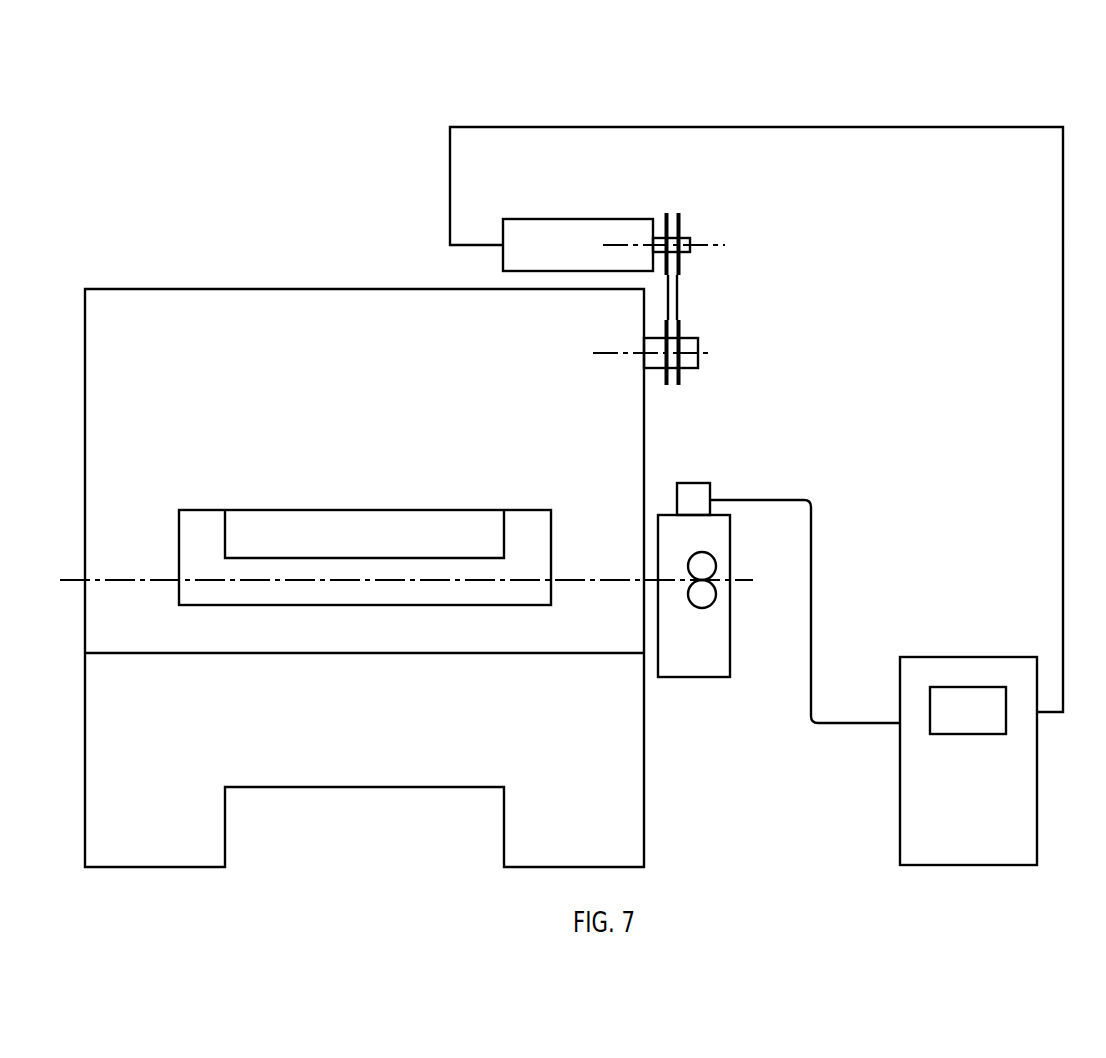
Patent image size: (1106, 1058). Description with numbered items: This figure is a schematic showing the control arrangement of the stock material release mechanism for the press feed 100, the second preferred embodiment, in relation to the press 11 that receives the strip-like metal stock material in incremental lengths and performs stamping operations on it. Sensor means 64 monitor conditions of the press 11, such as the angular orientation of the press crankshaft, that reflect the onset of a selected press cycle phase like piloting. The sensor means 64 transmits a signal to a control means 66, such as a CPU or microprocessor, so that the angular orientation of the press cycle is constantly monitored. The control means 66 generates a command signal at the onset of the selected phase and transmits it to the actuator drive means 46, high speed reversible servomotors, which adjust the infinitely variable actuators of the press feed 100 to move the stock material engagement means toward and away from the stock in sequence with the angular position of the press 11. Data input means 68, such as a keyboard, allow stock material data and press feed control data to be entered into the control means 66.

The press 11 is at (225, 287).
The sensor means 64 is at (548, 217).
The actuator drive means 46 is at (708, 481).
The press feed 100 is at (699, 680).
The control means 66 is at (984, 655).
The data input means 68 is at (949, 686).